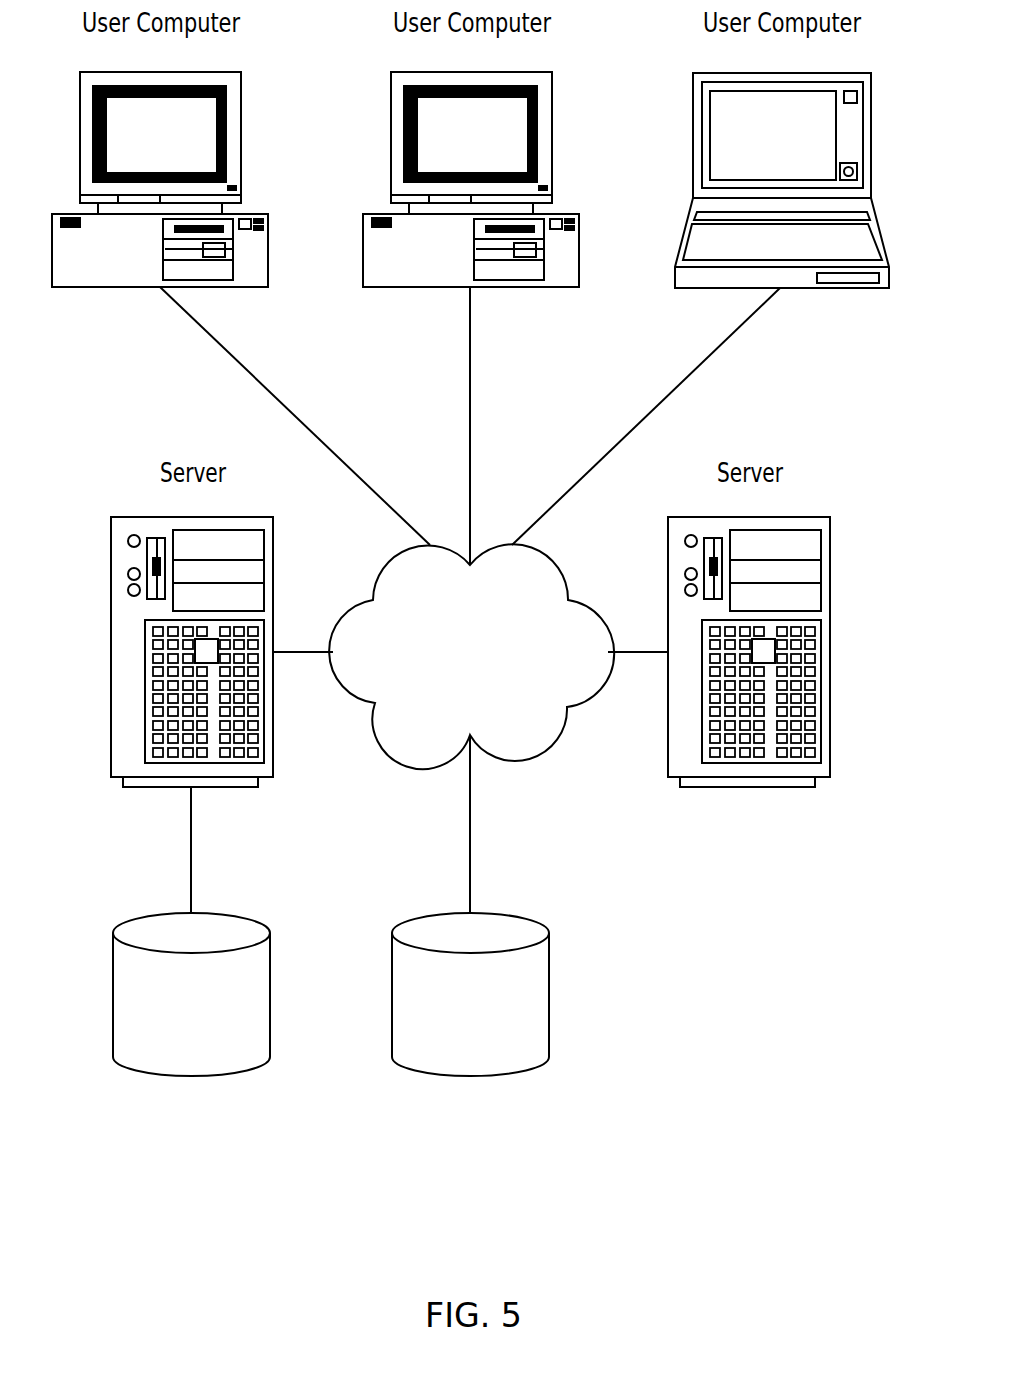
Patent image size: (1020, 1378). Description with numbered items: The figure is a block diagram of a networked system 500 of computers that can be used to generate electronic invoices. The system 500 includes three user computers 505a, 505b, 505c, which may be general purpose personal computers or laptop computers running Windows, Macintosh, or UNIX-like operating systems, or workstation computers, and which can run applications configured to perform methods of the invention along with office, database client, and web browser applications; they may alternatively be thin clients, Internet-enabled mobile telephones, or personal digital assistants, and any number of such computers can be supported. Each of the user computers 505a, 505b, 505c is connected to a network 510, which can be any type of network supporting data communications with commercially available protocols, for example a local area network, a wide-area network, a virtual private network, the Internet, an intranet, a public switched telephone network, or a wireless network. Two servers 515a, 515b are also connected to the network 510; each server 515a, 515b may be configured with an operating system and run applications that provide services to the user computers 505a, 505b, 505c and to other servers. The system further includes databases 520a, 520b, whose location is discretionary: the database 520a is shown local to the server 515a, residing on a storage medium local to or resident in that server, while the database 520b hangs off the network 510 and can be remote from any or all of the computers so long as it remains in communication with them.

The system 500 is at (740, 1138).
The user computer 505a is at (270, 232).
The user computer 505b is at (363, 233).
The user computer 505c is at (691, 180).
The network 510 is at (510, 760).
The server 515a is at (111, 653).
The server 515b is at (830, 652).
The database 520a is at (190, 1075).
The database 520b is at (469, 1075).